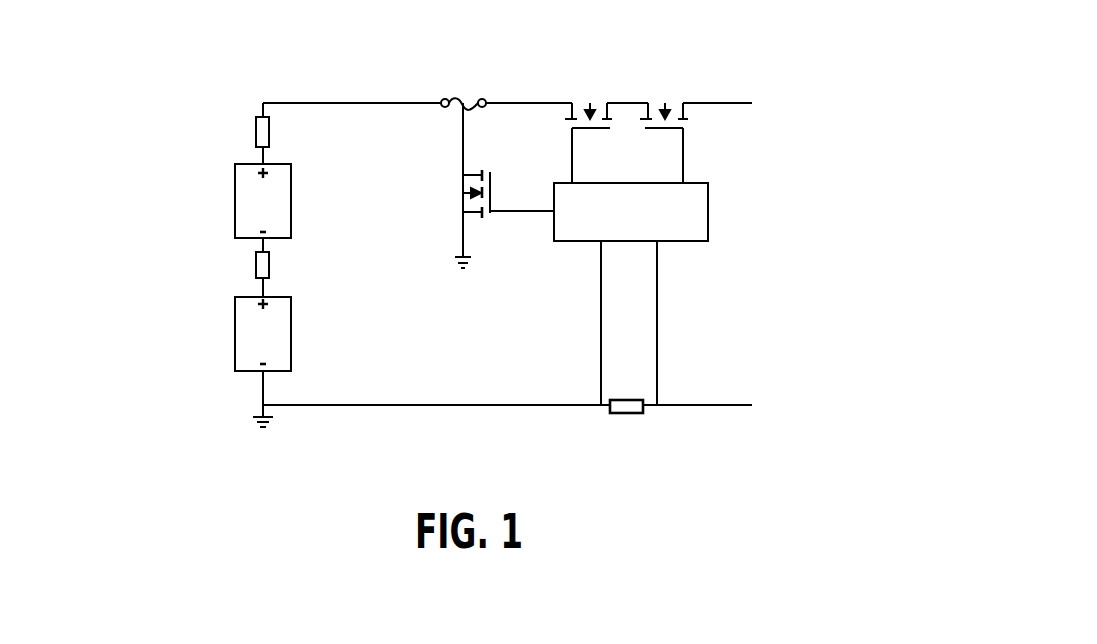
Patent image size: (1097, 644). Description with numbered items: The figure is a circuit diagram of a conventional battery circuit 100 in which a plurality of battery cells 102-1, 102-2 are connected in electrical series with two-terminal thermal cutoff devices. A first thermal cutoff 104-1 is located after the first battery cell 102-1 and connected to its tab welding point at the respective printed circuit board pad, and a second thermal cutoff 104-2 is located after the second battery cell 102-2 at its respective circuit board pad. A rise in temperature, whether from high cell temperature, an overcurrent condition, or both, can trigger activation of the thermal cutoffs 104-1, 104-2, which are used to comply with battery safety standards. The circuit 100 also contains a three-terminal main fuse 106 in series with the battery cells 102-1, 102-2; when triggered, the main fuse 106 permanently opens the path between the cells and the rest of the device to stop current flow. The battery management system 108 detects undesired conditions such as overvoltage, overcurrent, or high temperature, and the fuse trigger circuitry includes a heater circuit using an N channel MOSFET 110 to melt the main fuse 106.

The battery circuit 100 is at (774, 40).
The first battery cell 102-1 is at (291, 335).
The second battery cell 102-2 is at (291, 188).
The first thermal cutoff 104-1 is at (255, 275).
The second thermal cutoff 104-2 is at (268, 132).
The main fuse 106 is at (456, 99).
The battery management system 108 is at (631, 212).
The N channel metal-oxide semiconductor field effect transistor 110 is at (490, 172).